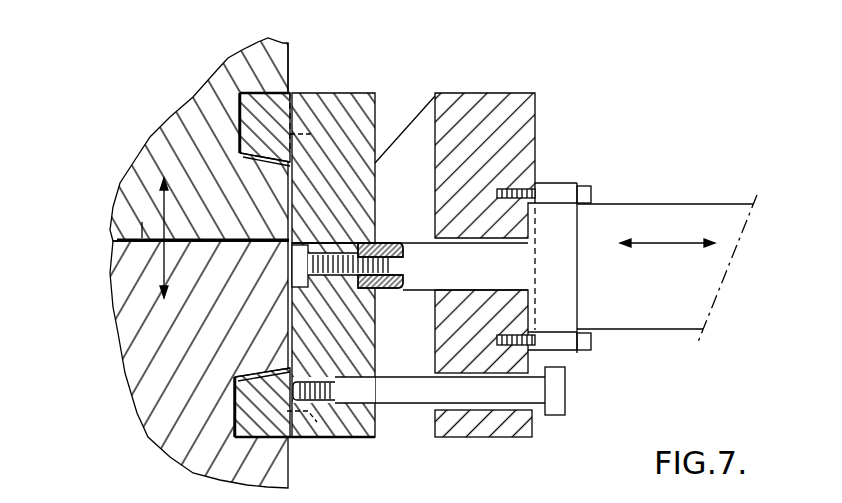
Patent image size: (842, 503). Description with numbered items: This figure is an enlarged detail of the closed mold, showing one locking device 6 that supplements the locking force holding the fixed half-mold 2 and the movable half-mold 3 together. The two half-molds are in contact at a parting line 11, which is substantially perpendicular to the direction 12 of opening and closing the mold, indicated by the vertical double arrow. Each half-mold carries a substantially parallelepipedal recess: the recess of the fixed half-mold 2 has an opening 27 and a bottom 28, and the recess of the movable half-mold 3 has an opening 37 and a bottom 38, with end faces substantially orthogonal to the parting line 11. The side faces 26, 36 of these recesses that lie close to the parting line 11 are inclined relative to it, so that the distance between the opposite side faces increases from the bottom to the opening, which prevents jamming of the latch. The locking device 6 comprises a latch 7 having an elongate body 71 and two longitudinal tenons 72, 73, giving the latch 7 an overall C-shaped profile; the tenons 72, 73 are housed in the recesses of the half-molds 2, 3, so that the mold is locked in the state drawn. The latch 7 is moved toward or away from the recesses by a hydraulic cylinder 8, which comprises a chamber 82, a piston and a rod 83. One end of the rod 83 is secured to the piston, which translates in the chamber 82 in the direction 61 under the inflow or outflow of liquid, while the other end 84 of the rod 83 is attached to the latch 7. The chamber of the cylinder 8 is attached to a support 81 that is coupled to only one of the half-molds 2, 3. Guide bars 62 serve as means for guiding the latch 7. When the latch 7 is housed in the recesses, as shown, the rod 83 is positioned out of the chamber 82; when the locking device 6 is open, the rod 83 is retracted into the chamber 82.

The fixed half-mold 2 is at (140, 185).
The movable half-mold 3 is at (160, 377).
The locking device 6 is at (628, 132).
The latch 7 is at (352, 90).
The hydraulic cylinder 8 is at (615, 227).
The parting line 11 is at (142, 222).
The direction of opening and closing the mold 12 is at (178, 238).
The side face of recess close to the parting line 26 is at (243, 160).
The opening of recess 27 is at (311, 134).
The bottom of recess 28 is at (238, 121).
The side face of recess close to the parting line 36 is at (183, 357).
The opening of recess 37 is at (313, 418).
The bottom of recess 38 is at (233, 410).
The direction for locking and opening the locking device 61 is at (667, 234).
The guide bars 62 is at (405, 393).
The elongate body 71 is at (350, 423).
The longitudinal tenon 72 is at (260, 122).
The longitudinal tenon 73 is at (257, 407).
The support 81 is at (425, 155).
The chamber 82 is at (677, 295).
The rod 83 is at (422, 273).
The other end of the rod 84 is at (377, 290).